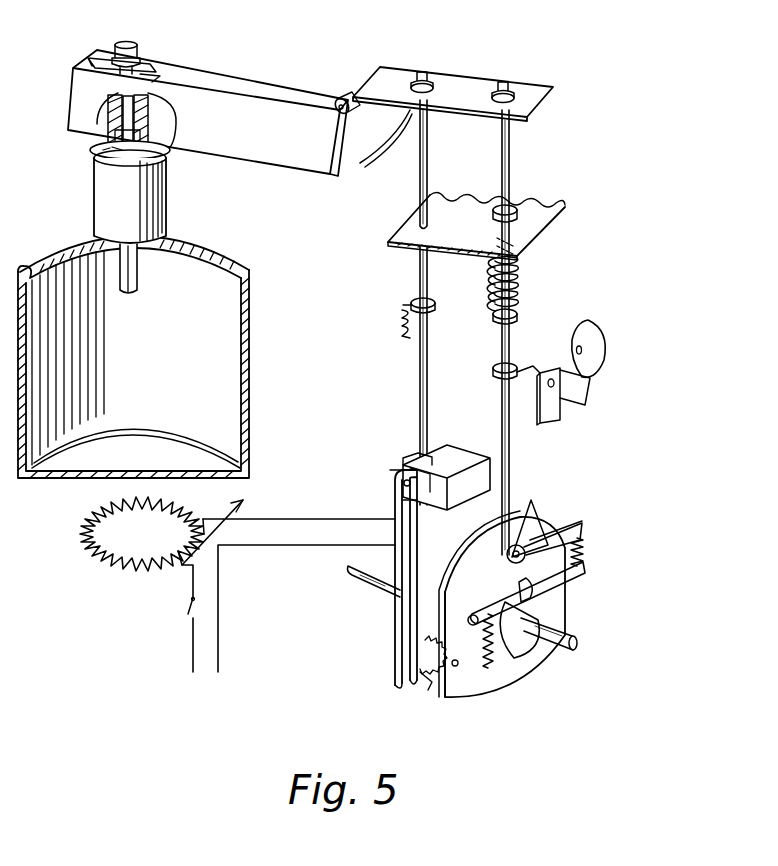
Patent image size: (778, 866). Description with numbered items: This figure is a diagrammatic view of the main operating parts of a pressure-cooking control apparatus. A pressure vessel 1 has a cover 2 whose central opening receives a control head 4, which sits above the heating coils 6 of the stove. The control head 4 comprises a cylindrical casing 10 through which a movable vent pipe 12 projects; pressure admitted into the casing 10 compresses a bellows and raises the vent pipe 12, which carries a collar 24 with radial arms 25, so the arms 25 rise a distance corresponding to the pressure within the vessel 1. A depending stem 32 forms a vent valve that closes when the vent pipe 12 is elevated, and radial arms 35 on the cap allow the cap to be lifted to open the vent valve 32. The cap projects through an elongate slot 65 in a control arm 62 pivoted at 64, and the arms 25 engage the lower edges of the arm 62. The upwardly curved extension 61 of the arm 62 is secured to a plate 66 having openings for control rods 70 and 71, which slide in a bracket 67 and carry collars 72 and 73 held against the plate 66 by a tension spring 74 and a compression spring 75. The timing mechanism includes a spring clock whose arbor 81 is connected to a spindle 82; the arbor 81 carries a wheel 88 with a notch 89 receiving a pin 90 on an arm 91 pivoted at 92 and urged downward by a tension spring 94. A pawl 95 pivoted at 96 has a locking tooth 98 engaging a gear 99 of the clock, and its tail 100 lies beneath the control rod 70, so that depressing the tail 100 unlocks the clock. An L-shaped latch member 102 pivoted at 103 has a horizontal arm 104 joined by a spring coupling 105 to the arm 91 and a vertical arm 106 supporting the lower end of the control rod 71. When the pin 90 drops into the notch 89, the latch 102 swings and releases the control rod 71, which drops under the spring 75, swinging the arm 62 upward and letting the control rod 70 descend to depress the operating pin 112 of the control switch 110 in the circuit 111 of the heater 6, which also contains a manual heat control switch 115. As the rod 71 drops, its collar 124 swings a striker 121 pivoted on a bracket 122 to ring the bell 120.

The pressure vessel 1 is at (133, 357).
The cover 2 is at (165, 260).
The control head 4 is at (168, 203).
The heating coils 6 is at (142, 534).
The cylindrical casing 10 is at (105, 193).
The vent pipe 12 is at (108, 120).
The collar 24 is at (110, 133).
The radial arms 25 is at (92, 152).
The depending stem 32 is at (108, 118).
The radial arms 35 is at (136, 77).
The extension 61 is at (375, 160).
The control arm 62 is at (208, 113).
The pivot 64 is at (343, 97).
The elongate slot 65 is at (103, 58).
The plate 66 is at (453, 94).
The bracket 67 is at (545, 210).
The control rod 70 is at (420, 390).
The control rod 71 is at (512, 335).
The collar 72 is at (428, 72).
The collar 73 is at (510, 82).
The tension spring 74 is at (400, 328).
The compression spring 75 is at (518, 283).
The arbor 81 is at (580, 638).
The spindle 82 is at (370, 580).
The wheel 88 is at (555, 605).
The notch 89 is at (530, 655).
The pin 90 is at (520, 586).
The arm 91 is at (558, 578).
The pivot 92 is at (473, 614).
The tension spring 94 is at (480, 658).
The pawl 95 is at (395, 642).
The pivot 96 is at (397, 483).
The locking tooth 98 is at (420, 683).
The gear 99 is at (428, 690).
The tail 100 is at (400, 468).
The latch member 102 is at (550, 525).
The pivot 103 is at (525, 546).
The horizontal arm 104 is at (575, 523).
The spring coupling 105 is at (585, 548).
The vertical arm 106 is at (536, 505).
The control switch 110 is at (470, 452).
The circuit 111 is at (288, 574).
The operating pin 112 is at (450, 448).
The heat control switch 115 is at (181, 626).
The bell 120 is at (592, 332).
The striker 121 is at (585, 393).
The bracket 122 is at (560, 412).
The collar 124 is at (493, 372).